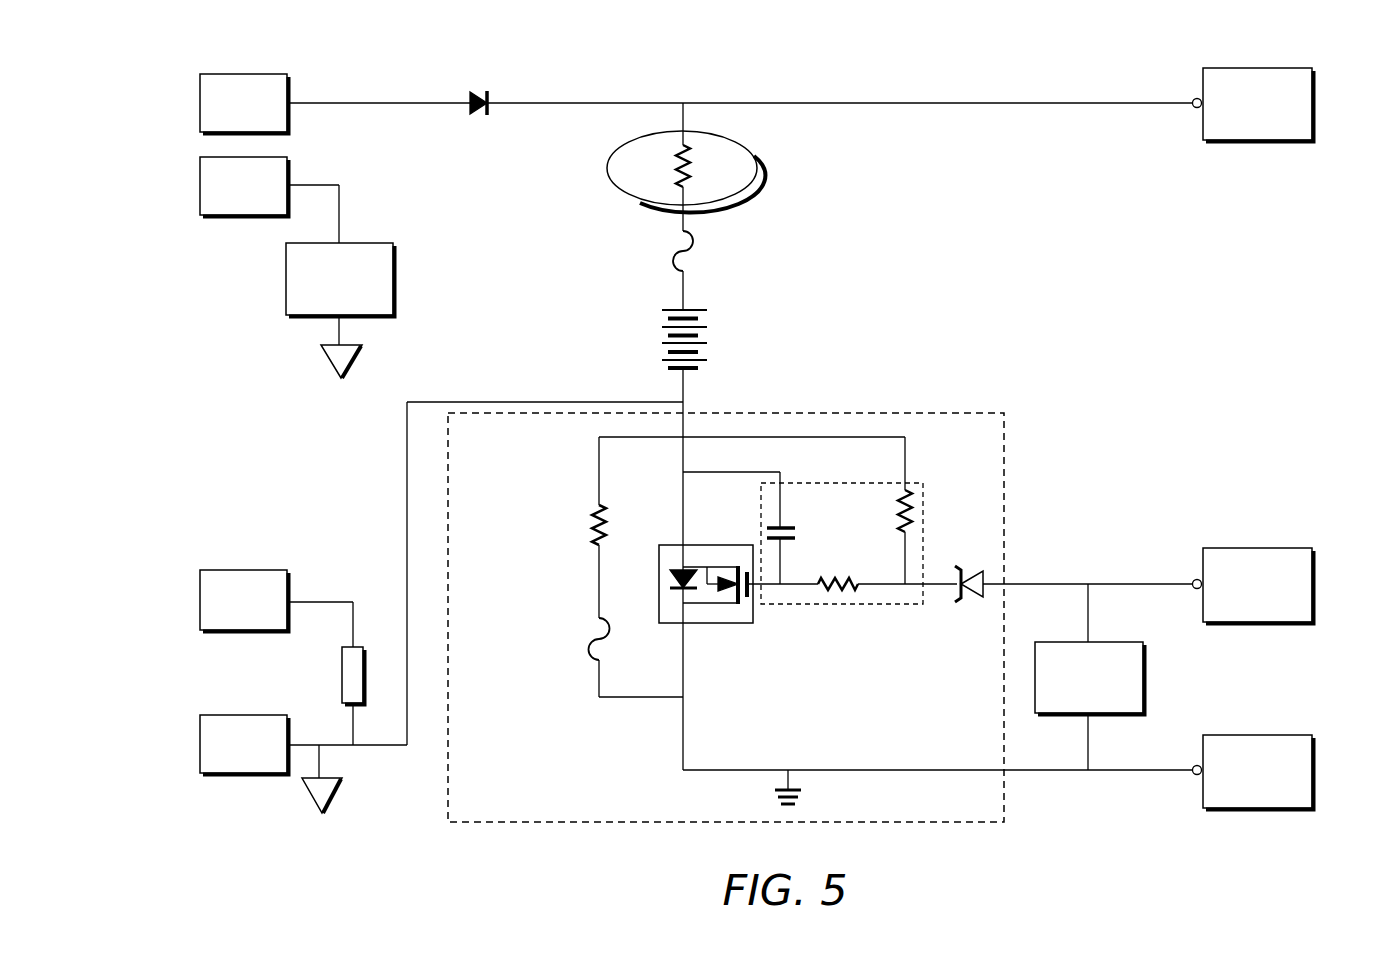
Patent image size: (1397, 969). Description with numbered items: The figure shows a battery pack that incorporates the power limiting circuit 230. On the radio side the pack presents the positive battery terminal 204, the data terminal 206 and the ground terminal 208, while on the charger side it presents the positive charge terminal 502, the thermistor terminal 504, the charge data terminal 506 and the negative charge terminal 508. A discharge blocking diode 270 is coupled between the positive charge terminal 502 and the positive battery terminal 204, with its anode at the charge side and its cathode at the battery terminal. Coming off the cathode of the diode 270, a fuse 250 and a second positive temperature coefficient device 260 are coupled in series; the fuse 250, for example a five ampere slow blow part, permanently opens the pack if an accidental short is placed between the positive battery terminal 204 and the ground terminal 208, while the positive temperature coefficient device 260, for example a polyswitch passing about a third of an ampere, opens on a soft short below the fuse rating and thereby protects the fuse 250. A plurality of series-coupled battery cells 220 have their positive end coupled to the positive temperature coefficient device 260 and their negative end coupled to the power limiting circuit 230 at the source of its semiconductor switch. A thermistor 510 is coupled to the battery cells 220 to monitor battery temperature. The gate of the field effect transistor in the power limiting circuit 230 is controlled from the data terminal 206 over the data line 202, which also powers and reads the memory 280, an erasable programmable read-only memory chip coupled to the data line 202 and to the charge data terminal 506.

The positive charge terminal 502 is at (200, 103).
The charge data terminal 506 is at (200, 185).
The memory 280 is at (286, 279).
The discharge blocking diode 270 is at (504, 82).
The fuse 250 is at (758, 168).
The PTC2 device 260 is at (674, 261).
The battery cells 220 is at (706, 336).
The power limiting circuit 230 is at (1011, 401).
The data line 202 is at (938, 581).
The positive battery terminal 204 is at (1312, 104).
The data terminal 206 is at (1312, 585).
The ground terminal 208 is at (1312, 771).
The thermistor terminal 504 is at (200, 602).
The negative charge terminal 508 is at (200, 745).
The thermistor 510 is at (342, 675).